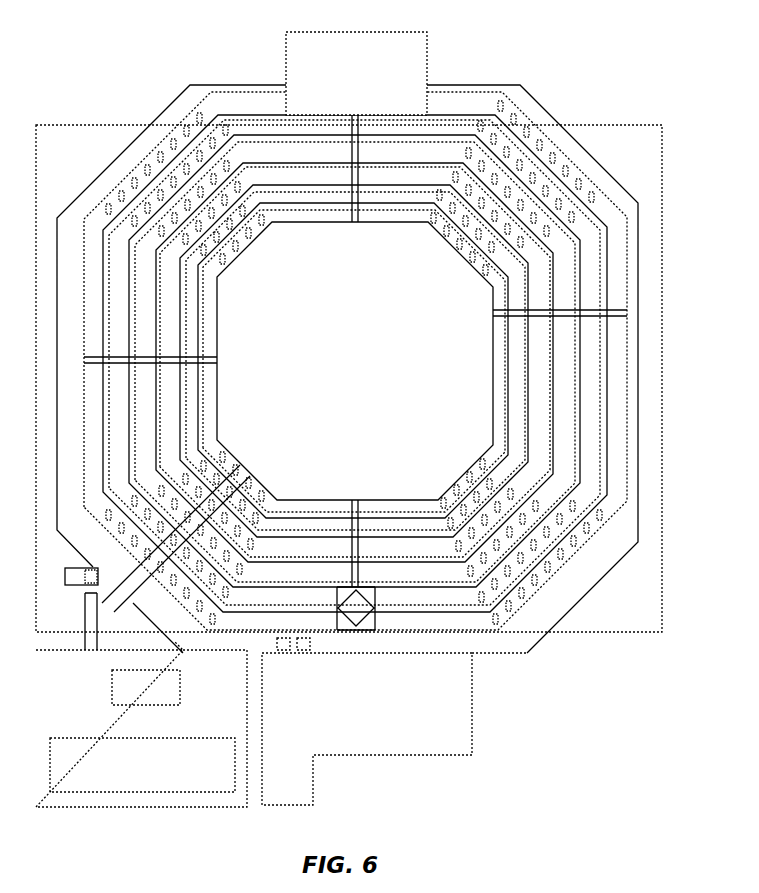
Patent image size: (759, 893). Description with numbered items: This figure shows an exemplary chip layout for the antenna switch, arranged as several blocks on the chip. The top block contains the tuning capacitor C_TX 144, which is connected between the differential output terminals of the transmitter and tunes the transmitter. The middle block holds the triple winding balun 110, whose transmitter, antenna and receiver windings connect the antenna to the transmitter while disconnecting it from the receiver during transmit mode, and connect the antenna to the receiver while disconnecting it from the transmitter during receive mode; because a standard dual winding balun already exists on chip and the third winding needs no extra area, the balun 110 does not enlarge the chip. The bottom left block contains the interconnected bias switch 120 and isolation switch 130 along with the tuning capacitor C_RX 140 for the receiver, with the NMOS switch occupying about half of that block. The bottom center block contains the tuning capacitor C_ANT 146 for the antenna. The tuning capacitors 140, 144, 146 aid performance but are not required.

The balun 110 is at (662, 205).
The tuning capacitor C_TX 144 is at (430, 55).
The tuning capacitor C_ANT 146 is at (473, 693).
The tuning capacitor C_RX 140 is at (181, 689).
The bias switch 120 is at (145, 738).
The isolation switch 130 is at (142, 765).